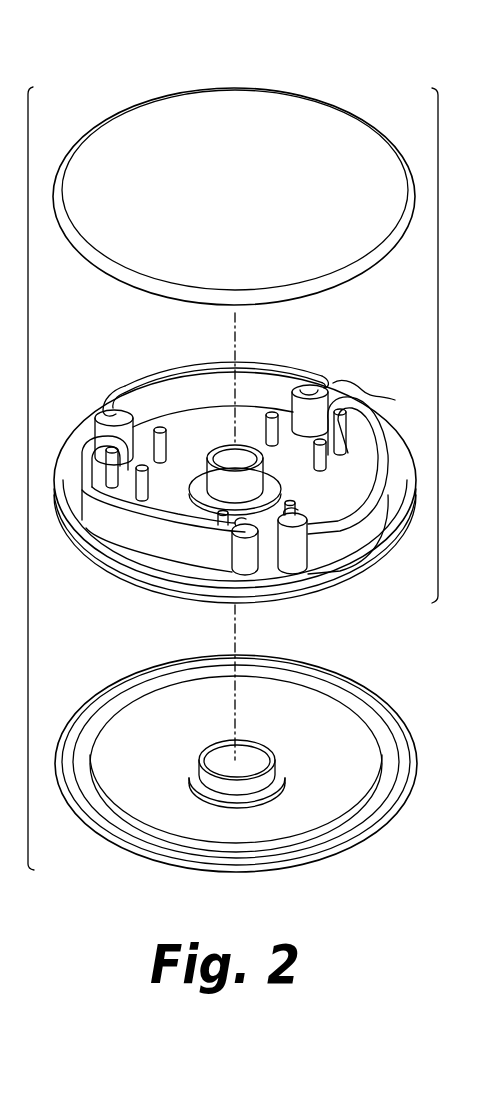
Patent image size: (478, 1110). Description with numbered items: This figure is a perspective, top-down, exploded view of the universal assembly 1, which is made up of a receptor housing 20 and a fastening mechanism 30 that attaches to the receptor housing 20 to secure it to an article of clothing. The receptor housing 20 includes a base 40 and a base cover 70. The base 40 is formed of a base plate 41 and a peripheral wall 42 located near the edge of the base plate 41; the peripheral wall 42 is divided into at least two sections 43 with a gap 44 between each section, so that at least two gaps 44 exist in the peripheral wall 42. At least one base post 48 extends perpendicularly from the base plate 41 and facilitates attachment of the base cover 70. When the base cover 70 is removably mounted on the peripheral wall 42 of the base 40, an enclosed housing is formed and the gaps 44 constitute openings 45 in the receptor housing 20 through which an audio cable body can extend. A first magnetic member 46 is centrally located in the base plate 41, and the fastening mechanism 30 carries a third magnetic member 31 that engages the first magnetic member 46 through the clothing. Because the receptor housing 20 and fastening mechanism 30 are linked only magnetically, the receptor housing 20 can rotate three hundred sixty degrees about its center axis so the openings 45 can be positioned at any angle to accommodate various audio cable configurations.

The universal assembly 1 is at (28, 471).
The receptor housing 20 is at (438, 314).
The fastening mechanism 30 is at (337, 852).
The third magnetic member 31 is at (252, 758).
The base 40 is at (114, 356).
The base plate 41 is at (102, 568).
The peripheral wall 42 is at (254, 362).
The sections 43 is at (177, 558).
The gap 44 is at (330, 353).
The openings 45 is at (285, 618).
The first magnetic member 46 is at (230, 450).
The base post 48 is at (162, 490).
The base cover 70 is at (245, 87).